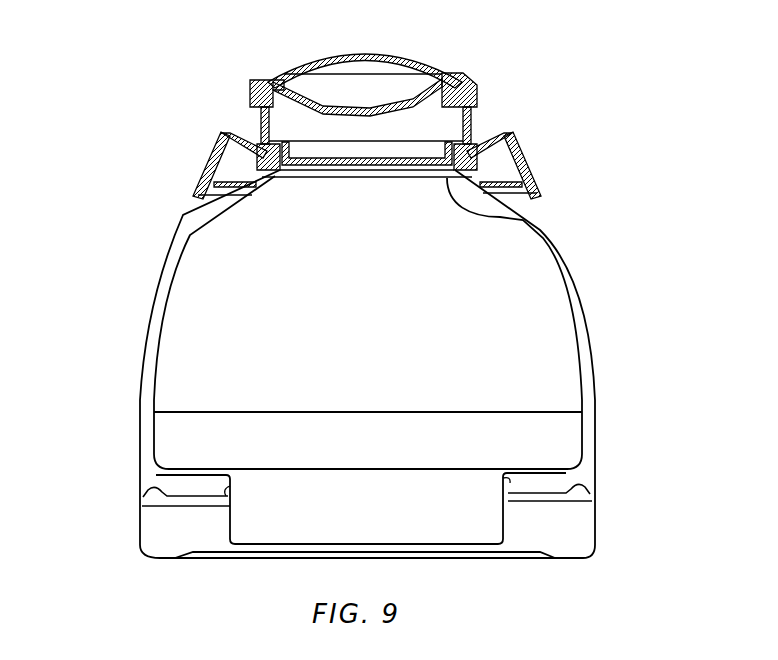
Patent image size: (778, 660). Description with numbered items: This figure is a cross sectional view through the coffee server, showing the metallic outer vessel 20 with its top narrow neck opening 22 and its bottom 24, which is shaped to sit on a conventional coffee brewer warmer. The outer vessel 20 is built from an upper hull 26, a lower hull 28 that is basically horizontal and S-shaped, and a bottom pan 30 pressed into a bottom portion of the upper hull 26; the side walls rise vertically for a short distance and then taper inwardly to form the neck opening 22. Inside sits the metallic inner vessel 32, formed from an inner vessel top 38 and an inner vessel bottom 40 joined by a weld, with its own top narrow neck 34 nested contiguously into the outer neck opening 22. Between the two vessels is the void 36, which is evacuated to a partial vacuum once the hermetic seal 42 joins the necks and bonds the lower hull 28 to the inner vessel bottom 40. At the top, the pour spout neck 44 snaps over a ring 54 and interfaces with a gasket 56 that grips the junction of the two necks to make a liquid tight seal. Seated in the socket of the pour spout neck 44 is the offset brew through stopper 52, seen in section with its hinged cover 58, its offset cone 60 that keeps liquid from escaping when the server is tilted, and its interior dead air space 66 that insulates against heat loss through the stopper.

The outer vessel 20 is at (128, 336).
The top narrow neck opening 22 is at (264, 146).
The bottom 24 is at (261, 558).
The upper hull 26 is at (590, 342).
The lower hull 28 is at (180, 497).
The bottom pan 30 is at (559, 557).
The inner vessel 32 is at (140, 402).
The top narrow neck 34 is at (259, 148).
The void 36 is at (148, 450).
The inner vessel top 38 is at (556, 277).
The inner vessel bottom 40 is at (581, 443).
The hermetic seal 42 is at (473, 157).
The pour spout neck 44 is at (214, 148).
The offset brew through stopper 52 is at (340, 87).
The ring 54 is at (503, 181).
The gasket 56 is at (506, 214).
The hinged cover 58 is at (291, 75).
The offset cone 60 is at (362, 108).
The dead air space 66 is at (433, 123).